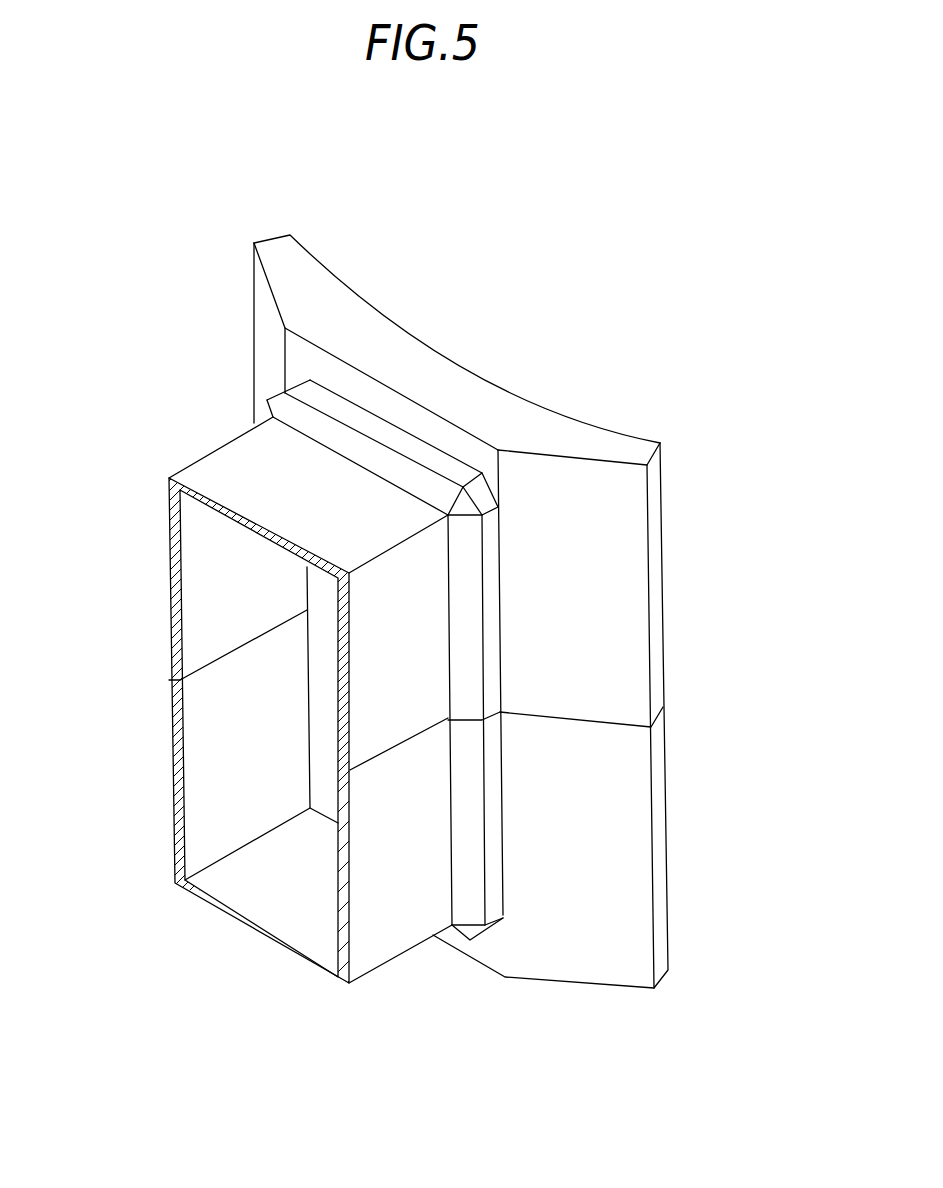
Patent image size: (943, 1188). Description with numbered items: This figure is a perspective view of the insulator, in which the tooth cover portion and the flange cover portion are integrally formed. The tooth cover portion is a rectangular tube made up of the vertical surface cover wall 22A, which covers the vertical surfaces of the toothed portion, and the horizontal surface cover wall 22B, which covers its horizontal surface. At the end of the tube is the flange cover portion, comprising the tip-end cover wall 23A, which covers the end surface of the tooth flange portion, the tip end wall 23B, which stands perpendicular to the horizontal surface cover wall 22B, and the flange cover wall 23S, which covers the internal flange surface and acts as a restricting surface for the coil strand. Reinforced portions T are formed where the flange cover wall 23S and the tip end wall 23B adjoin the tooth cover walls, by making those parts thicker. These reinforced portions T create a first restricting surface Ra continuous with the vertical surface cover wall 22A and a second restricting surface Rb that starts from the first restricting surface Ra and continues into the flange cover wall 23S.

The vertical surface cover wall 22A is at (168, 583).
The horizontal surface cover wall 22B is at (220, 470).
The tip-end cover wall 23A is at (490, 407).
The tip end wall 23B is at (395, 410).
The flange cover wall 23S is at (615, 548).
The first restricting surface Ra is at (293, 407).
The second restricting surface Rb is at (313, 390).
The reinforced portion T is at (397, 463).